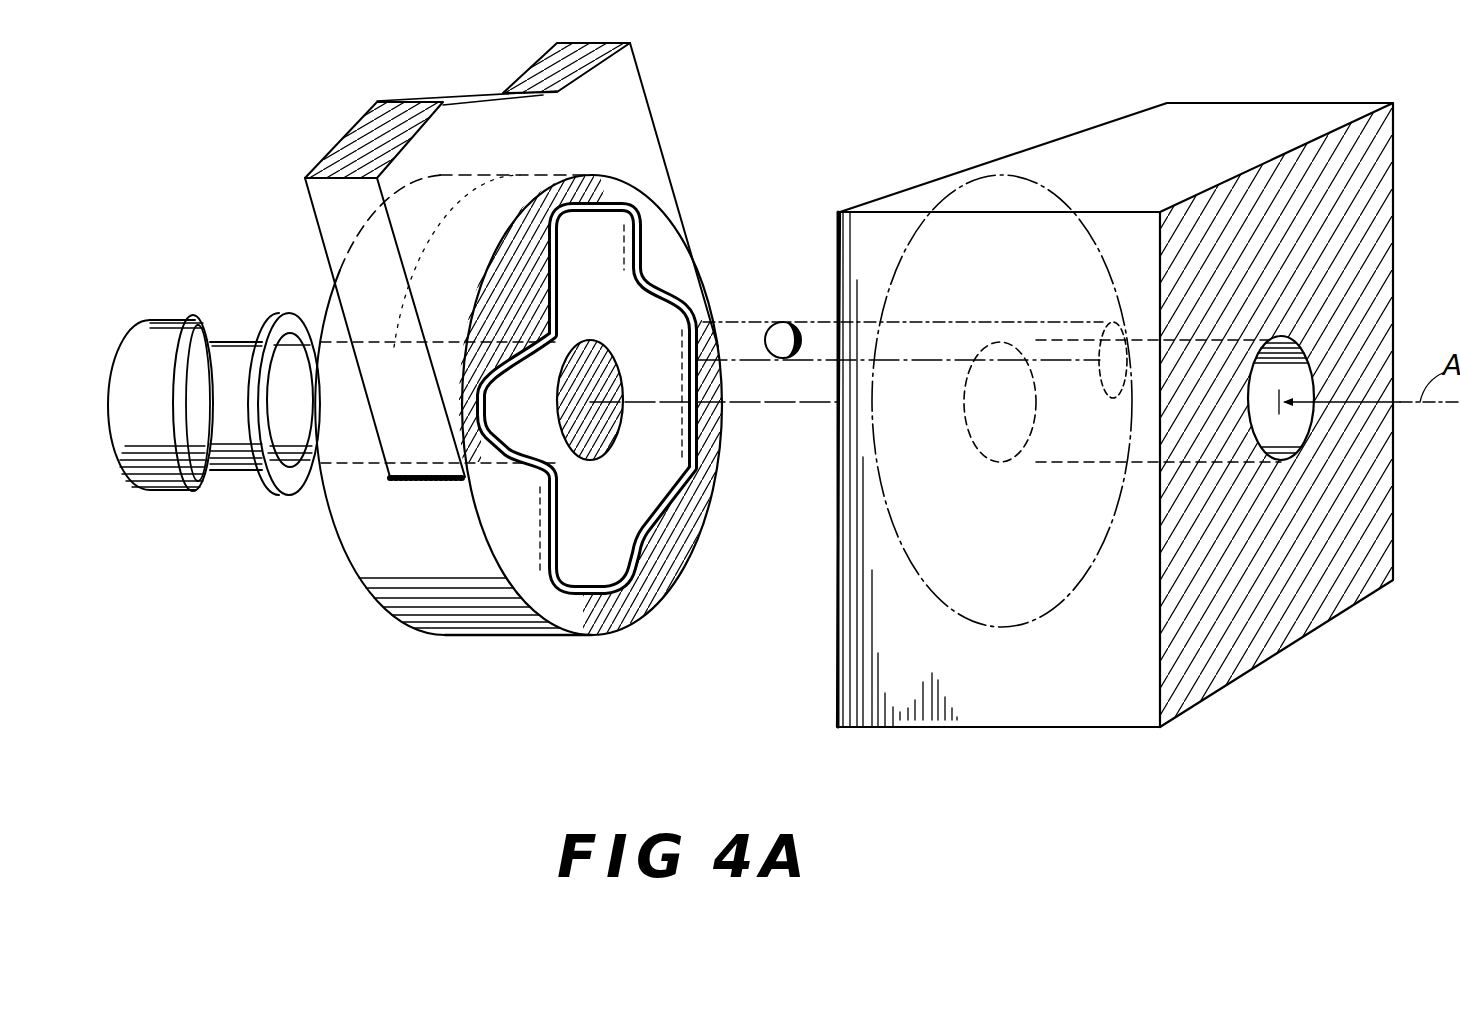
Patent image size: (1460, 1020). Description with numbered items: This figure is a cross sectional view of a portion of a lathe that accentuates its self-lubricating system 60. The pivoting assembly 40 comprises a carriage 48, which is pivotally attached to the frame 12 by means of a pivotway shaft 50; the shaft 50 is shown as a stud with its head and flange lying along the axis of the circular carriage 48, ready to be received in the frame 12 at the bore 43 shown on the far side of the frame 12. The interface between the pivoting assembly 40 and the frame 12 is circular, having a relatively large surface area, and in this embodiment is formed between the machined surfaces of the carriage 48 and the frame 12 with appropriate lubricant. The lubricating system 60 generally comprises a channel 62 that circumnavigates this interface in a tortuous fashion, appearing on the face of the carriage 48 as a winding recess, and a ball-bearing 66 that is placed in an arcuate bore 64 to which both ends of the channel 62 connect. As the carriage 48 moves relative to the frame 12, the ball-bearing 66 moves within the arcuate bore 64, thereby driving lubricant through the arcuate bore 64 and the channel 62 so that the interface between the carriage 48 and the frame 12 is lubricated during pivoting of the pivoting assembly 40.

The frame 12 is at (1138, 399).
The pivoting assembly 40 is at (549, 339).
The bore 43 is at (1290, 412).
The carriage 48 is at (353, 145).
The pivotway shaft 50 is at (237, 455).
The self-lubricating system 60 is at (830, 283).
The channel 62 is at (650, 515).
The arcuate bore 64 is at (705, 433).
The ball-bearing 66 is at (781, 324).